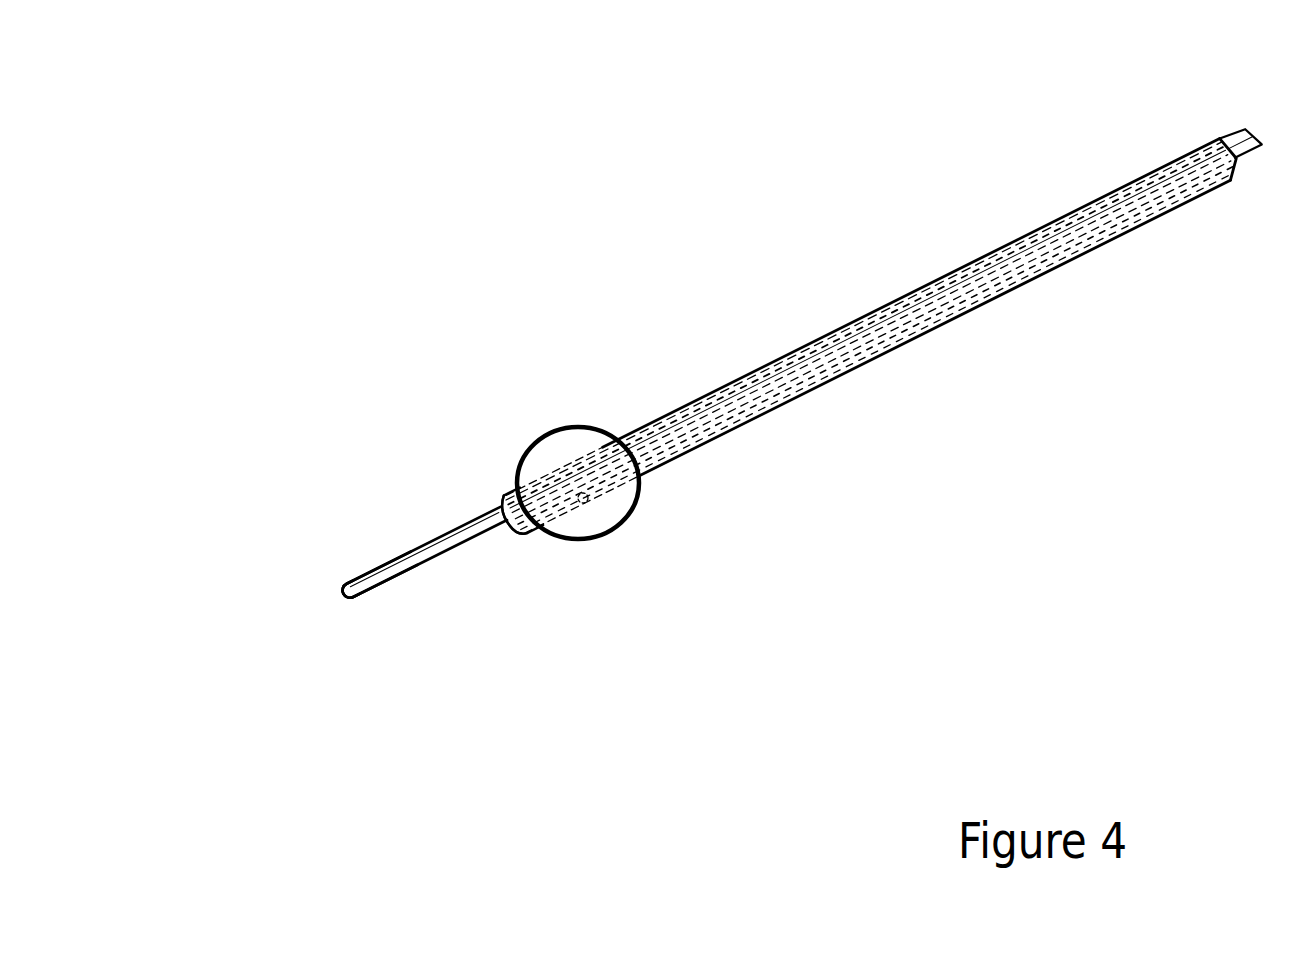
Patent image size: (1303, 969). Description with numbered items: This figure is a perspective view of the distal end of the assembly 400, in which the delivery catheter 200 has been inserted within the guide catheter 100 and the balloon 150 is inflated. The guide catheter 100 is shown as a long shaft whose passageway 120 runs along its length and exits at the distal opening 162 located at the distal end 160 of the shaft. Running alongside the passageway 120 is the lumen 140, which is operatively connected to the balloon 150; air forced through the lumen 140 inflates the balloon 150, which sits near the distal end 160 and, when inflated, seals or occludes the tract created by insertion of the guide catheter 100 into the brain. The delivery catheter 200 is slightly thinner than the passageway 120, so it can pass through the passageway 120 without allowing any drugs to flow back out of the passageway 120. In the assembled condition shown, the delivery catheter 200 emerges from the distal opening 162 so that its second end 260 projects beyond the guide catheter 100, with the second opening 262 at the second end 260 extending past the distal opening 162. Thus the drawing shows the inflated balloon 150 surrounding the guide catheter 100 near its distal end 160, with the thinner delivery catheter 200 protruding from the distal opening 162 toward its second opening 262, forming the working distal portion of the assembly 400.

The guide catheter 100 is at (925, 320).
The passageway 120 is at (726, 385).
The lumen 140 is at (777, 397).
The balloon 150 is at (564, 430).
The distal end 160 is at (523, 535).
The distal opening 162 is at (508, 527).
The delivery catheter 200 is at (432, 547).
The second end 260 is at (370, 568).
The second opening 262 is at (335, 598).
The assembly 400 is at (967, 232).